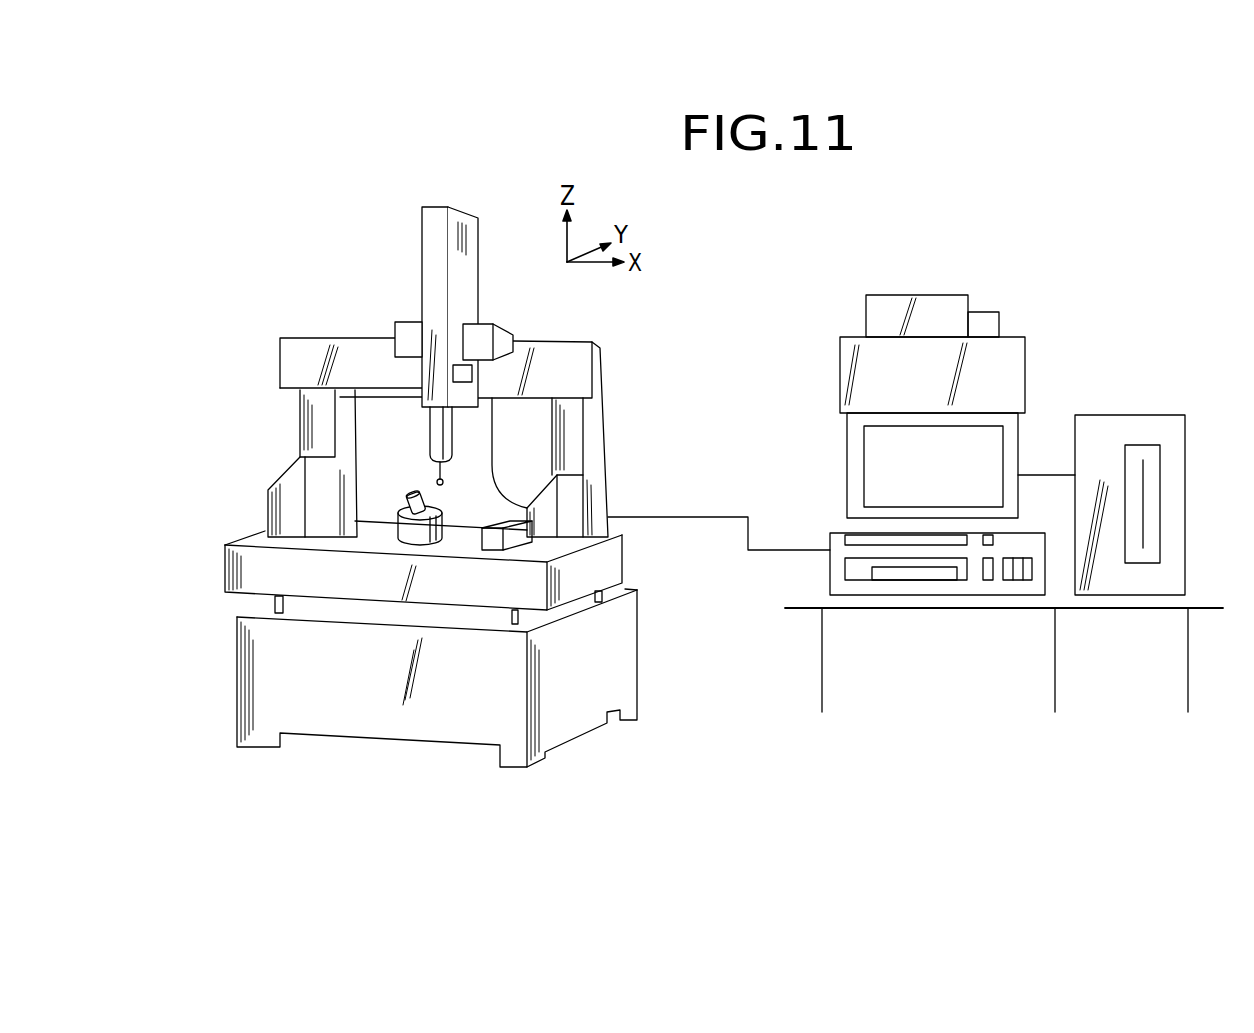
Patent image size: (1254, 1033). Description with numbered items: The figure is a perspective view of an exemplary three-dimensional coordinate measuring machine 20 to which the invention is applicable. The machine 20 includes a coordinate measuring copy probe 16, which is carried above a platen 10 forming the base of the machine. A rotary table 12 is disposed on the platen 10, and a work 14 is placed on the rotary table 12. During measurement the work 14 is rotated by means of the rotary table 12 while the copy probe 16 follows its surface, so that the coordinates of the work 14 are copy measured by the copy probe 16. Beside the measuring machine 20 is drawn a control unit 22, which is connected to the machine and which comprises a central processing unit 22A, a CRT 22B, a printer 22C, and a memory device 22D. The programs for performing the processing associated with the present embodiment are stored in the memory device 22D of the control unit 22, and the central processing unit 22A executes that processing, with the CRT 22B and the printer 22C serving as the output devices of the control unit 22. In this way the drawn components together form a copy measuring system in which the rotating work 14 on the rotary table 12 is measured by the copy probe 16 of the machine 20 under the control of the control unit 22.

The platen 10 is at (223, 573).
The rotary table 12 is at (447, 518).
The work 14 is at (410, 510).
The coordinate measuring copy probe 16 is at (437, 473).
The three-dimensional coordinate measuring machine 20 is at (397, 212).
The control unit 22 is at (1050, 337).
The central processing unit 22A is at (830, 583).
The CRT 22B is at (847, 472).
The printer 22C is at (840, 365).
The memory device 22D is at (1127, 413).